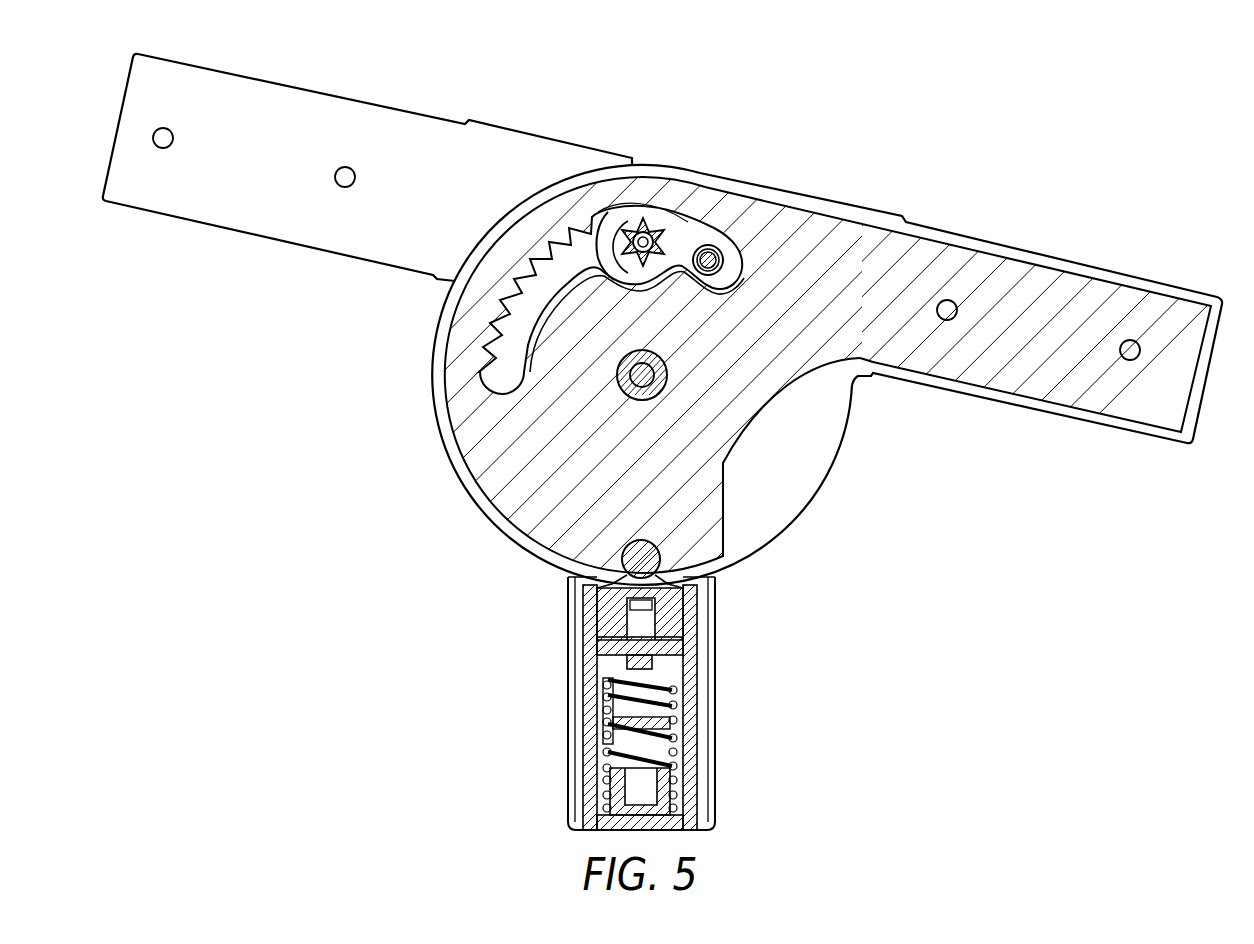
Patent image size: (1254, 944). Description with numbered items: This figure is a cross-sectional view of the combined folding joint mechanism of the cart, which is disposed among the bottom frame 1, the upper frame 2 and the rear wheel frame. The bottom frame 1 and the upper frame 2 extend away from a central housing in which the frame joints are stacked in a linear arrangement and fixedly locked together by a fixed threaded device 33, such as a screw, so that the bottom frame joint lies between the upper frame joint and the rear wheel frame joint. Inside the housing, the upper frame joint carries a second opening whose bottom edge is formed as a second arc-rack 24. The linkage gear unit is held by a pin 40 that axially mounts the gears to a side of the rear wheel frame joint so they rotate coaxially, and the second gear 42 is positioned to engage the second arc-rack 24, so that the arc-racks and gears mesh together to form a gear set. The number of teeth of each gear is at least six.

The bottom frame 1 is at (1028, 325).
The upper frame 2 is at (258, 198).
The second arc-rack 24 is at (574, 230).
The fixed threaded device 33 is at (648, 378).
The pin 40 is at (655, 233).
The second gear 42 is at (643, 237).